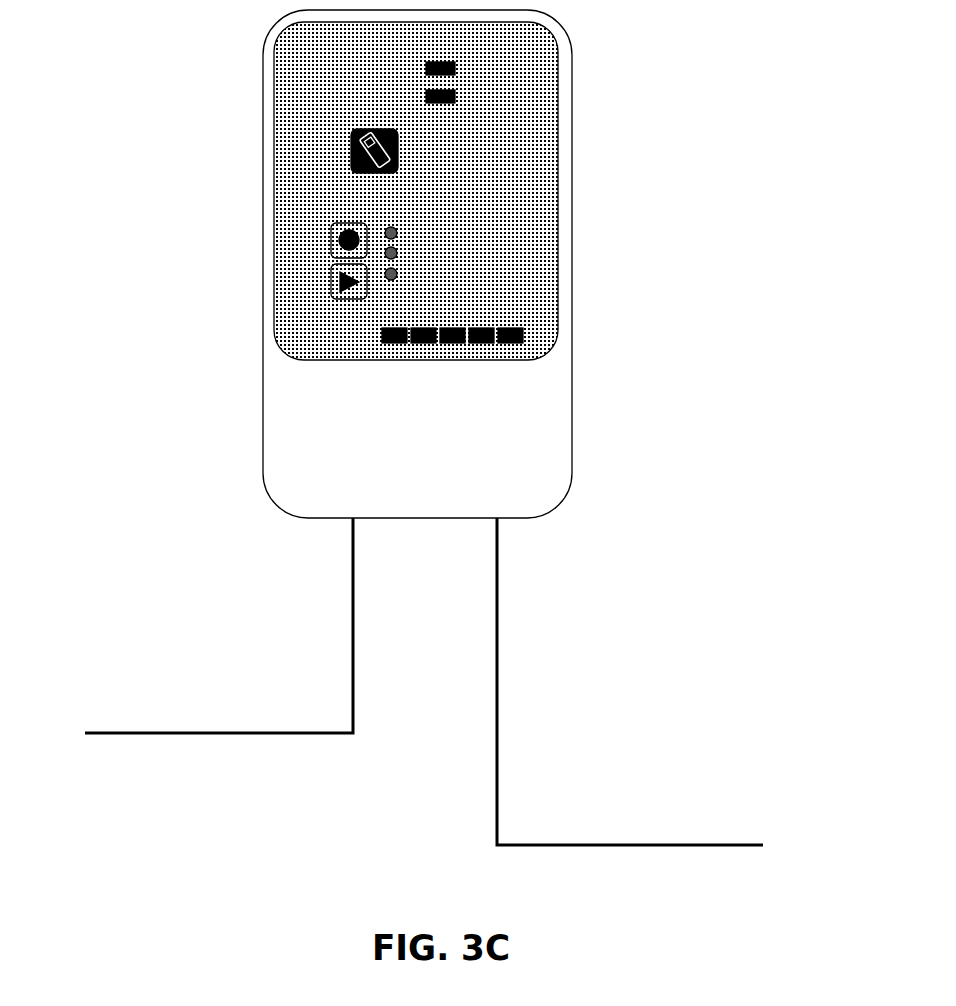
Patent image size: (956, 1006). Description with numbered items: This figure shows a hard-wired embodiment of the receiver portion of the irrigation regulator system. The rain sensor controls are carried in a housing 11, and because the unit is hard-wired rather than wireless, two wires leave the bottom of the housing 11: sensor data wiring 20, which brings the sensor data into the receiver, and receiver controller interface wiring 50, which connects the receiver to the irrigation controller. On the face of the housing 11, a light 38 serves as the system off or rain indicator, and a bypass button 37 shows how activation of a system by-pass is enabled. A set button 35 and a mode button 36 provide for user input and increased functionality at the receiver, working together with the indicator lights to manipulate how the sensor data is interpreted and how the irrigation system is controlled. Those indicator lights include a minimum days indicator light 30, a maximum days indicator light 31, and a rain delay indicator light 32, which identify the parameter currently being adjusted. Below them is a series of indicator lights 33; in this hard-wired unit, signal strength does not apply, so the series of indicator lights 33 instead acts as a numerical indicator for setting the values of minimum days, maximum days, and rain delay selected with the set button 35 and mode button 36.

The housing 11 is at (606, 436).
The sensor data wiring 20 is at (630, 681).
The minimum days indicator light 30 is at (398, 229).
The maximum days indicator light 31 is at (398, 251).
The rain delay indicator light 32 is at (398, 272).
The series of indicator lights 33 is at (540, 337).
The set button 35 is at (336, 292).
The mode button 36 is at (331, 246).
The bypass button 37 is at (351, 160).
The system off or rain indicator light 38 is at (425, 72).
The receiver controller interface wiring 50 is at (219, 625).